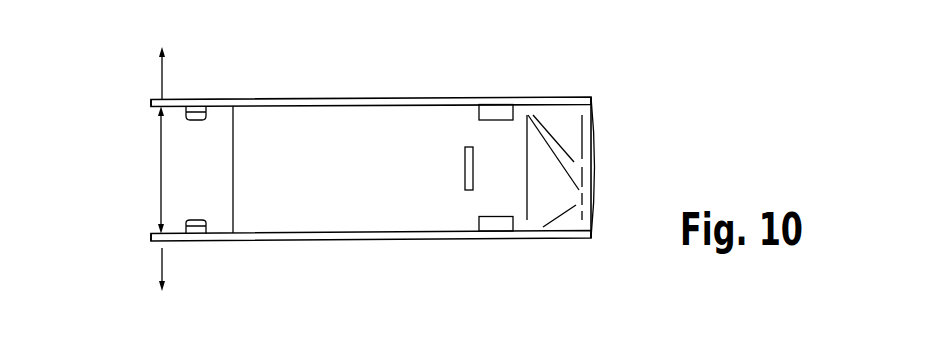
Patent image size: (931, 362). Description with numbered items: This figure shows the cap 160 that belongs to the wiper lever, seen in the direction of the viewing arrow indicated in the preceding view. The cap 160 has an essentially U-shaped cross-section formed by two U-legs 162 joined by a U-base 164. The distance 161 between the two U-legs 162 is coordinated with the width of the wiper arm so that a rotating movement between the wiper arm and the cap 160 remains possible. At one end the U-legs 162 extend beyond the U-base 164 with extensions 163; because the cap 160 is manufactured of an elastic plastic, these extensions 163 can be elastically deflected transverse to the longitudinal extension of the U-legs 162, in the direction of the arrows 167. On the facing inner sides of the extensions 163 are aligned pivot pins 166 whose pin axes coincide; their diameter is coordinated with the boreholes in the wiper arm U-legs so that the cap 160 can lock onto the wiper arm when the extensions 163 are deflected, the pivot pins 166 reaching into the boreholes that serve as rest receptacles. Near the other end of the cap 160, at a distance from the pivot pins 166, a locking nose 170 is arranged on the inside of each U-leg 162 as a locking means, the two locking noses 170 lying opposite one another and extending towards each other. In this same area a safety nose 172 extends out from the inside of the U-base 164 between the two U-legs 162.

The cap 160 is at (373, 168).
The distance 161 is at (160, 162).
The U-legs 162 is at (362, 103).
The extensions 163 is at (173, 103).
The U-base 164 is at (300, 128).
The pivot pins 166 is at (193, 108).
The arrows 167 is at (162, 67).
The locking nose 170 is at (495, 110).
The safety nose 172 is at (468, 167).